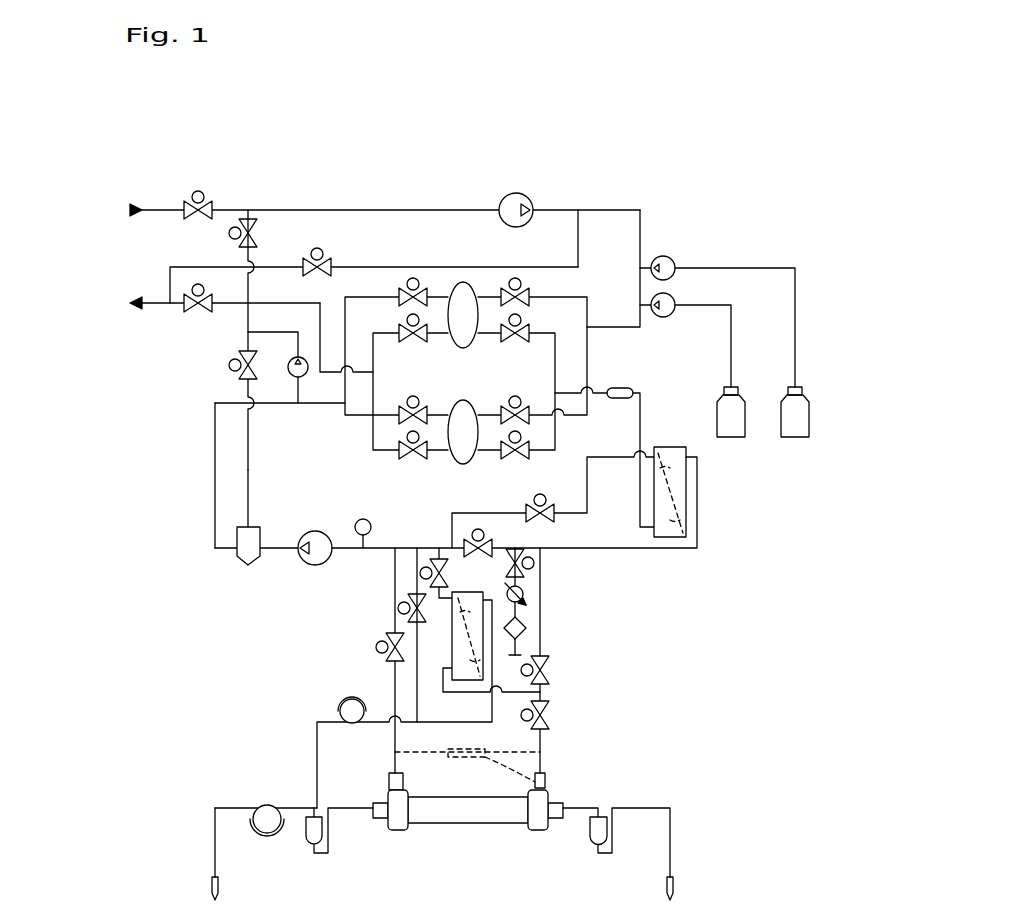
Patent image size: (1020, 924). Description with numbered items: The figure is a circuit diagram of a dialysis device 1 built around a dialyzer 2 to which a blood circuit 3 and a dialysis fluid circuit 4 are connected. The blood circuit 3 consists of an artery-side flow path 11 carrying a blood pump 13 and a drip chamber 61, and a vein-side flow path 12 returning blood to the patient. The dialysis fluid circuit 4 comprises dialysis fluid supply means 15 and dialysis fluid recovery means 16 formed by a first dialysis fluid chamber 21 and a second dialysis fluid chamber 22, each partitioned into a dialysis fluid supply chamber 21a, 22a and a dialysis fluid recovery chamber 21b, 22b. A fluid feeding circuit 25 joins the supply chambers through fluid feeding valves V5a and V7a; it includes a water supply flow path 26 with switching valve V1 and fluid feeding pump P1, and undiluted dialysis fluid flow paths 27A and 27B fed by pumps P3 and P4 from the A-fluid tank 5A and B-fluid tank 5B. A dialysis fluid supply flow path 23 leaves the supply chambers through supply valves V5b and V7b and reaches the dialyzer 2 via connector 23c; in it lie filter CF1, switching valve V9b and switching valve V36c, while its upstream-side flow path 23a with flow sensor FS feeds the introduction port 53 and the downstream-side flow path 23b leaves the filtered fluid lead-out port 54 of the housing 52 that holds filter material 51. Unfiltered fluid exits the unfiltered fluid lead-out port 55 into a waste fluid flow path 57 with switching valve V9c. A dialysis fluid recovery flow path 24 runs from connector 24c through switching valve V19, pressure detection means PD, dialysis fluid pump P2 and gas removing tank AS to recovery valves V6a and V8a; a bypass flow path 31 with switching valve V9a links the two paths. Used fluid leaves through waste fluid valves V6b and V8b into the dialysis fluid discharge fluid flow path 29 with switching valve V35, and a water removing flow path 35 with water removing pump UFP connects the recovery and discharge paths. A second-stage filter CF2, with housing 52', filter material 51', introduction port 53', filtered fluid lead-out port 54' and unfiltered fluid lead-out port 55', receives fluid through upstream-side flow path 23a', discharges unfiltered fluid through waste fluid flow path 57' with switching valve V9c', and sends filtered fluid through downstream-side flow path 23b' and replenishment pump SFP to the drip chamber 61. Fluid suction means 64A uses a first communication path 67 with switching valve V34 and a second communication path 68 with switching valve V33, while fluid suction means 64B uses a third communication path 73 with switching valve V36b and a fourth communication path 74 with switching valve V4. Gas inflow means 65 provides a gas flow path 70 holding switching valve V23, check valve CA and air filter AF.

The dialysis device 1 is at (631, 108).
The dialyzer 2 is at (478, 828).
The blood circuit 3 is at (670, 819).
The dialysis fluid circuit 4 is at (697, 550).
The A-fluid tank 5A is at (799, 440).
The B-fluid tank 5B is at (735, 440).
The artery-side flow path 11 is at (213, 852).
The vein-side flow path 12 is at (672, 845).
The blood pump 13 is at (270, 805).
The dialysis fluid supply means 15 is at (587, 352).
The dialysis fluid recovery means 16 is at (370, 437).
The first dialysis fluid chamber 21 is at (451, 347).
The dialysis fluid supply chamber 21a is at (478, 284).
The dialysis fluid recovery chamber 21b is at (450, 284).
The second dialysis fluid chamber 22 is at (451, 460).
The dialysis fluid supply chamber 22a is at (478, 410).
The dialysis fluid recovery chamber 22b is at (450, 410).
The dialysis fluid supply flow path 23 is at (665, 551).
The upstream-side flow path 23a is at (621, 457).
The upstream-side flow path 23a' is at (521, 740).
The downstream-side flow path 23b is at (718, 513).
The downstream-side flow path 23b' is at (379, 740).
The connector 23c is at (522, 777).
The dialysis fluid recovery flow path 24 is at (393, 766).
The connector 24c is at (448, 757).
The fluid feeding circuit 25 is at (640, 208).
The water supply flow path 26 is at (350, 207).
The undiluted dialysis fluid flow path 27A is at (797, 341).
The undiluted dialysis fluid flow path 27B is at (733, 341).
The dialysis fluid discharge fluid flow path 29 is at (232, 308).
The bypass flow path 31 is at (428, 545).
The water removing flow path 35 is at (296, 392).
The filter material 51 is at (632, 503).
The filter material 51' is at (512, 673).
The housing 52 is at (735, 492).
The housing 52' is at (454, 661).
The introduction port 53 is at (624, 535).
The introduction port 53' is at (434, 703).
The filtered fluid lead-out port 54 is at (699, 418).
The filtered fluid lead-out port 54' is at (494, 575).
The unfiltered fluid lead-out port 55 is at (626, 473).
The unfiltered fluid lead-out port 55' is at (441, 616).
The waste fluid flow path 57 is at (553, 481).
The waste fluid flow path 57' is at (401, 573).
The drip chamber 61 is at (306, 840).
The fluid suction means 64A is at (320, 313).
The fluid suction means 64B is at (248, 493).
The gas inflow means 65 is at (530, 628).
The first communication path 67 is at (255, 288).
The second communication path 68 is at (398, 265).
The gas flow path 70 is at (536, 567).
The third communication path 73 is at (415, 672).
The fourth communication path 74 is at (247, 437).
The switching valve V1 is at (210, 197).
The switching valve V4 is at (230, 372).
The fluid feeding valve V5a is at (530, 293).
The supply valve V5b is at (530, 330).
The recovery valve V6a is at (400, 293).
The waste fluid valve V6b is at (400, 330).
The fluid feeding valve V7a is at (525, 408).
The supply valve V7b is at (517, 460).
The recovery valve V8a is at (405, 408).
The waste fluid valve V8b is at (402, 458).
The switching valve V9a is at (484, 533).
The switching valve V9b is at (549, 680).
The switching valve V9c is at (552, 493).
The switching valve V9c' is at (385, 584).
The switching valve V19 is at (380, 648).
The switching valve V23 is at (516, 549).
The switching valve V33 is at (330, 262).
The switching valve V34 is at (256, 240).
The switching valve V35 is at (185, 312).
The switching valve V36b is at (403, 611).
The switching valve V36c is at (549, 726).
The fluid feeding pump P1 is at (510, 193).
The dialysis fluid pump P2 is at (313, 530).
The pump P3 is at (676, 259).
The pump P4 is at (676, 313).
The pressure detection means PD is at (366, 519).
The water removing pump UFP is at (288, 365).
The replenishment pump SFP is at (343, 701).
The flow sensor FS is at (625, 390).
The check valve CA is at (528, 592).
The air filter AF is at (522, 656).
The gas removing tank AS is at (246, 566).
The filter CF1 is at (686, 505).
The filter CF2 is at (452, 648).